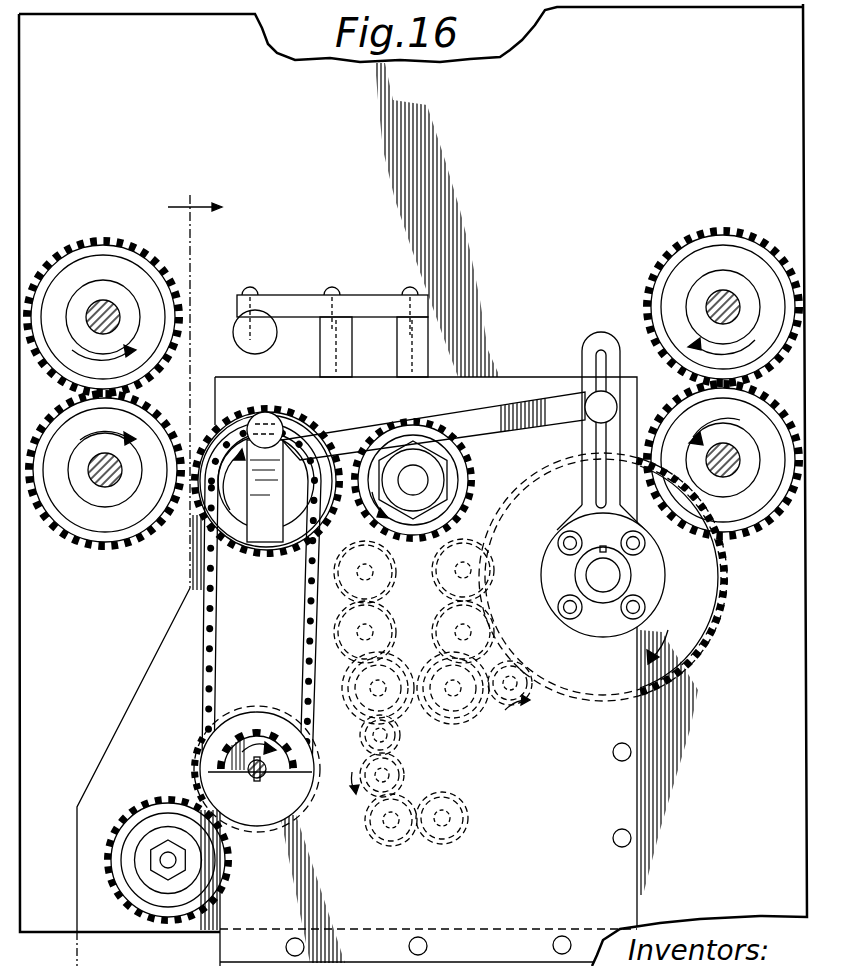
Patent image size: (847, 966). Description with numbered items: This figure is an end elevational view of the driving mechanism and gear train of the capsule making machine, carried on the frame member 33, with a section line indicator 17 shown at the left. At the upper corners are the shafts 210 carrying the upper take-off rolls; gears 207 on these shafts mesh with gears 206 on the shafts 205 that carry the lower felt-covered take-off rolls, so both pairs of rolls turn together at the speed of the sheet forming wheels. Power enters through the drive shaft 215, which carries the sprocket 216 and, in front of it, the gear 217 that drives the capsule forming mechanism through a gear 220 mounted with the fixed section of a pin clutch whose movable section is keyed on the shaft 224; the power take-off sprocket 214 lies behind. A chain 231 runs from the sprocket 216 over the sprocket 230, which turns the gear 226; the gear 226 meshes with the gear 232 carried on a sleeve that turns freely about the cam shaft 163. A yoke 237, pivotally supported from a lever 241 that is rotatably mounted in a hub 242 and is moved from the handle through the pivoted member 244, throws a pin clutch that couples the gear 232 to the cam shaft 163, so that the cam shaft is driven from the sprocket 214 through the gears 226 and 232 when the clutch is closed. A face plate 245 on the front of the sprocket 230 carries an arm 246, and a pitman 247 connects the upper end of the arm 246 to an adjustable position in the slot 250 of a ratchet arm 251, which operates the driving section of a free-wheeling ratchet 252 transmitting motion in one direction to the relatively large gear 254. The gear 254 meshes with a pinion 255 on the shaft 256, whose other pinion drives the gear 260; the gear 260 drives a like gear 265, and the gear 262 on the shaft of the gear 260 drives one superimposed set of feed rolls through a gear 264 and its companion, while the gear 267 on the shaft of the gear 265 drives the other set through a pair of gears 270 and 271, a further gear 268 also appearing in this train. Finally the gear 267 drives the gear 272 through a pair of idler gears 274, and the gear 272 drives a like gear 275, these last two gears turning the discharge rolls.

The section line 17 is at (195, 383).
The frame member 33 is at (488, 72).
The cam shaft 163 is at (413, 465).
The shafts 205 is at (108, 487).
The gears 206 is at (150, 404).
The gears 207 is at (175, 358).
The shafts 210 is at (103, 300).
The power take-off sprocket 214 is at (243, 828).
The drive shaft 215 is at (255, 778).
The sprocket 216 is at (265, 718).
The gear 217 is at (196, 757).
The gear 220 is at (158, 800).
The shaft 224 is at (162, 864).
The gear 226 is at (190, 530).
The sprocket 230 is at (255, 548).
The chain 231 is at (216, 640).
The gear 232 is at (470, 462).
The yoke 237 is at (465, 445).
The lever 241 is at (378, 297).
The hub 242 is at (352, 350).
The member 244 is at (270, 340).
The face plate 245 is at (255, 420).
The arm 246 is at (270, 478).
The pitman 247 is at (503, 405).
The slot 250 is at (595, 363).
The ratchet arm 251 is at (598, 335).
The ratchet 252 is at (655, 578).
The gear 254 is at (728, 589).
The pinion gear 255 is at (536, 700).
The shaft 256 is at (520, 665).
The gear 260 is at (470, 722).
The gear 262 is at (485, 712).
The gear 264 is at (390, 570).
The gear 265 is at (425, 720).
The gear 267 is at (352, 715).
The gear 268 is at (442, 620).
The gear 270 is at (394, 607).
The gear 271 is at (392, 592).
The gear 272 is at (374, 840).
The idler gears 274 is at (364, 762).
The gear 275 is at (468, 836).